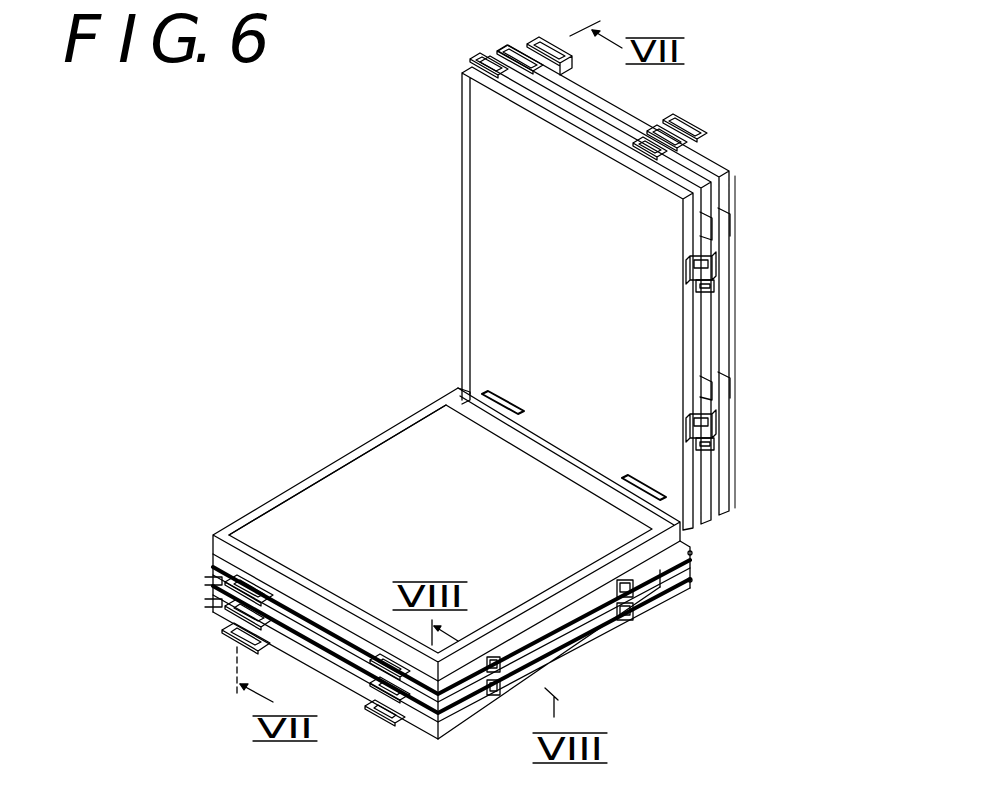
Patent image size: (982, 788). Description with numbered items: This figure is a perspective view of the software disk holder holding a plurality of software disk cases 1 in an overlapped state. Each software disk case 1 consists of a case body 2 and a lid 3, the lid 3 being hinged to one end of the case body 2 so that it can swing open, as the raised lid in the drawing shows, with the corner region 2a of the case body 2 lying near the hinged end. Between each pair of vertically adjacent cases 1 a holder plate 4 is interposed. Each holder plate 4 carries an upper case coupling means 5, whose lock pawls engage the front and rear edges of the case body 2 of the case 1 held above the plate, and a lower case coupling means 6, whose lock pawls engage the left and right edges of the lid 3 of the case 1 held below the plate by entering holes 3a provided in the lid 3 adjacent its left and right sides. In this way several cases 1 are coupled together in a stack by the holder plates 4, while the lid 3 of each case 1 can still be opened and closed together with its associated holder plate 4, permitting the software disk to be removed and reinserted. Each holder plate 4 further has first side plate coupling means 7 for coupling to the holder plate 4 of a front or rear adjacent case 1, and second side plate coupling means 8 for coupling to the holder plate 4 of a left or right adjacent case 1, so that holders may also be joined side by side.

The software disk case 1 is at (705, 502).
The case body 2 is at (303, 510).
The frame corner portion 2a is at (458, 388).
The lid 3 is at (463, 240).
The holes 3a is at (740, 217).
The holder plate 4 is at (717, 327).
The upper case coupling means 5 is at (495, 397).
The lower case coupling means 6 is at (715, 250).
The first side plate coupling means 7 is at (507, 60).
The second side plate coupling means 8 is at (717, 280).